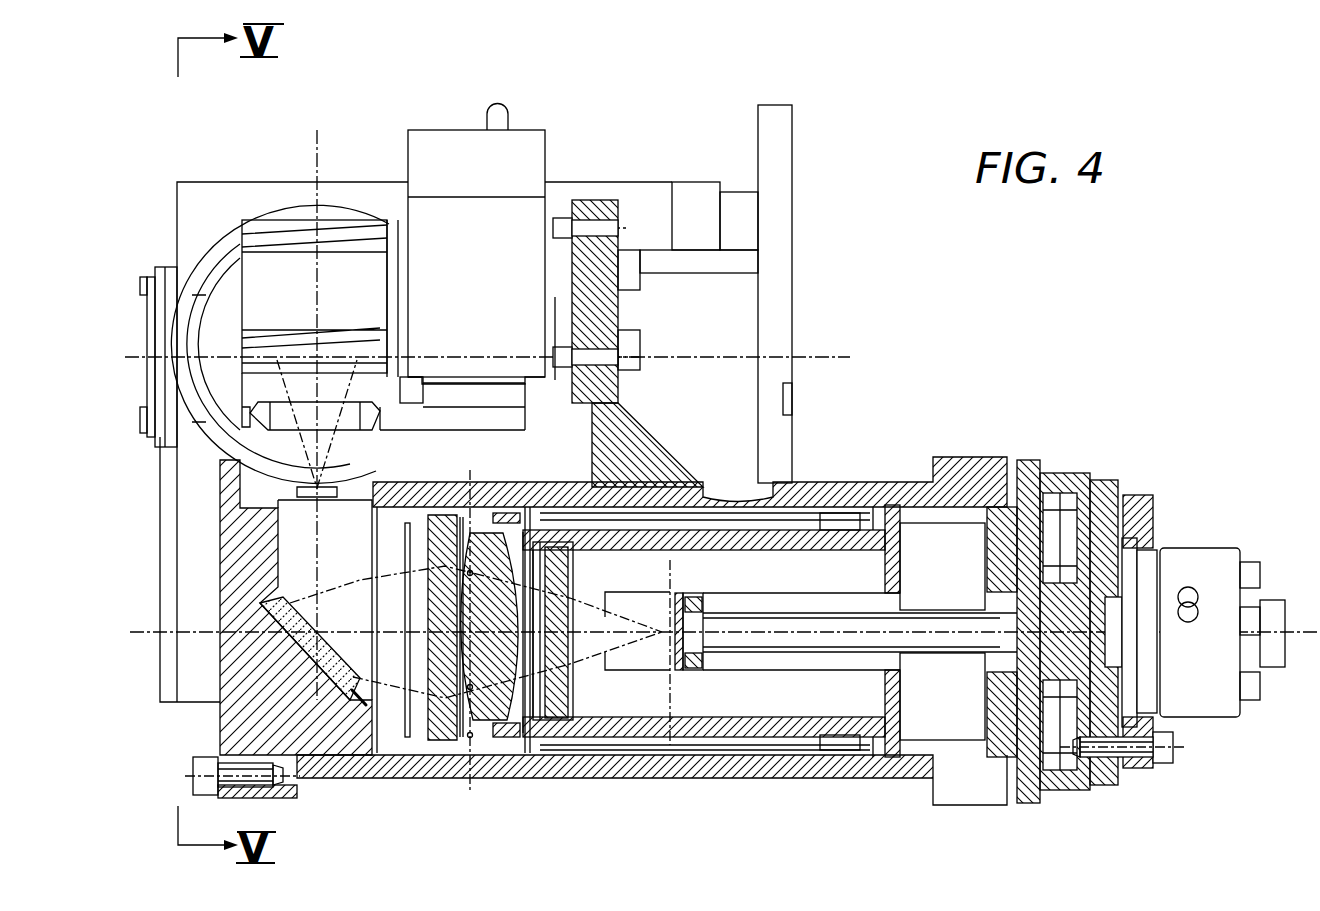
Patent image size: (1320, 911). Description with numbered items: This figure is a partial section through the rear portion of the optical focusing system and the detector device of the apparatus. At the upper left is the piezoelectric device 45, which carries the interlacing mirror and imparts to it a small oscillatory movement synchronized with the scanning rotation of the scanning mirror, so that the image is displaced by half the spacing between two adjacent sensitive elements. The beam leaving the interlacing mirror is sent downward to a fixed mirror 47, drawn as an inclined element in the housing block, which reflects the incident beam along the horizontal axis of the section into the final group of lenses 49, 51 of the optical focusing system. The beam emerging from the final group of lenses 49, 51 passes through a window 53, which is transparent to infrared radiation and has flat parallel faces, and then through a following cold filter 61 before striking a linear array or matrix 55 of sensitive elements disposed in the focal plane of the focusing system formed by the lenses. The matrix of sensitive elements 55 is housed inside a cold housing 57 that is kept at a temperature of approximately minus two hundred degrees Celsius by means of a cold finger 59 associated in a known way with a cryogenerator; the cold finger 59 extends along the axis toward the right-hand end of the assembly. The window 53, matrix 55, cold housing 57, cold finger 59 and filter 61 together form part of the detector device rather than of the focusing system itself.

The piezoelectric device 45 is at (362, 294).
The fixed mirror 47 is at (328, 570).
The final group of lenses 49 is at (326, 622).
The final group of lenses 51 is at (486, 625).
The window 53 is at (572, 590).
The linear array or matrix of sensitive elements 55 is at (662, 632).
The cold housing 57 is at (827, 550).
The cold finger 59 is at (944, 640).
The filter 61 is at (648, 680).